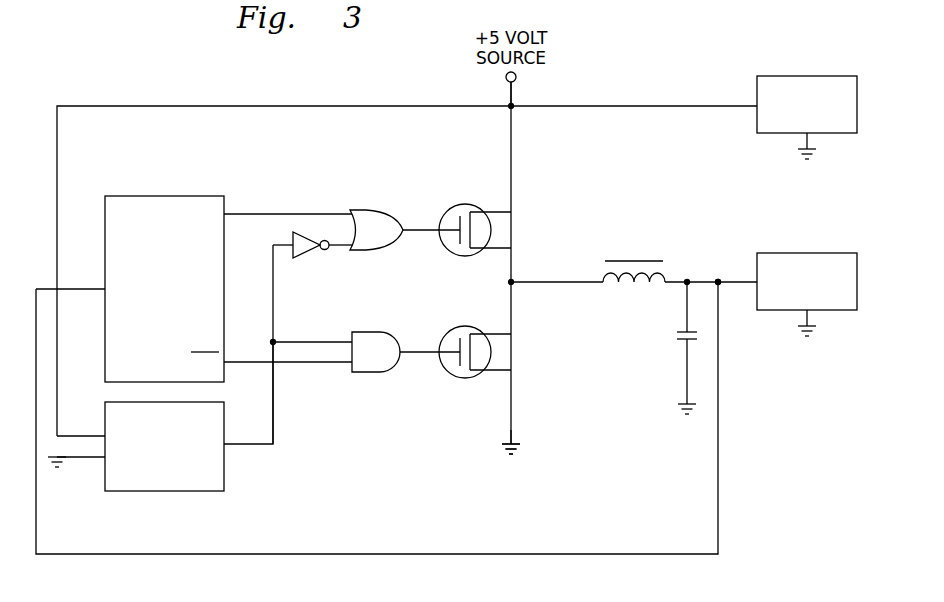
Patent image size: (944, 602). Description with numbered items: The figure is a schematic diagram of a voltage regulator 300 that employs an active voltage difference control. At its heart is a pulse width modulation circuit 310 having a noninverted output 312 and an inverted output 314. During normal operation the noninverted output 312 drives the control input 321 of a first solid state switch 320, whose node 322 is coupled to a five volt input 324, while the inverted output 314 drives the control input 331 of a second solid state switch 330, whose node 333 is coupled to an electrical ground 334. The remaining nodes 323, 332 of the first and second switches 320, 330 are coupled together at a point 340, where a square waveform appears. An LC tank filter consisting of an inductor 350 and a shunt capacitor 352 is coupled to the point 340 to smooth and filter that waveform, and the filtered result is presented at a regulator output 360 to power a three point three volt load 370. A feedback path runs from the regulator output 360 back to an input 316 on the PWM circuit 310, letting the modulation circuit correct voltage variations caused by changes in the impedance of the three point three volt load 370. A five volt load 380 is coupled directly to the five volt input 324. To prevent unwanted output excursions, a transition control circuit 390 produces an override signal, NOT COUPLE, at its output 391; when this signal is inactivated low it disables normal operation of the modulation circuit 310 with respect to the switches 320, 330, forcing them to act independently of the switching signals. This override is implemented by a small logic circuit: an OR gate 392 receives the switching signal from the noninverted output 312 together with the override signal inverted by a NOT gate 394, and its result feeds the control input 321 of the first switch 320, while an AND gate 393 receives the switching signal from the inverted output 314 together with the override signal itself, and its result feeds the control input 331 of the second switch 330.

The voltage regulator 300 is at (148, 62).
The pulse width modulation circuit 310 is at (165, 195).
The noninverted output 312 is at (226, 211).
The inverted output 314 is at (226, 366).
The input 316 is at (103, 287).
The first solid state switch 320 is at (462, 204).
The control input 321 is at (437, 228).
The node 322 is at (513, 212).
The remaining node 323 is at (513, 249).
The 5 volt input 324 is at (505, 78).
The second solid state switch 330 is at (462, 378).
The control input 331 is at (437, 355).
The remaining node 332 is at (513, 334).
The node 333 is at (513, 371).
The electrical ground 334 is at (522, 452).
The point 340 is at (508, 283).
The inductor 350 is at (667, 280).
The shunt capacitor 352 is at (674, 336).
The regulator output 360 is at (718, 279).
The 3.3 volt load 370 is at (808, 252).
The 5 volt load 380 is at (808, 75).
The transition control circuit 390 is at (165, 493).
The output 391 is at (226, 448).
The OR gate 392 is at (368, 209).
The AND gate 393 is at (368, 373).
The NOT gate 394 is at (314, 260).